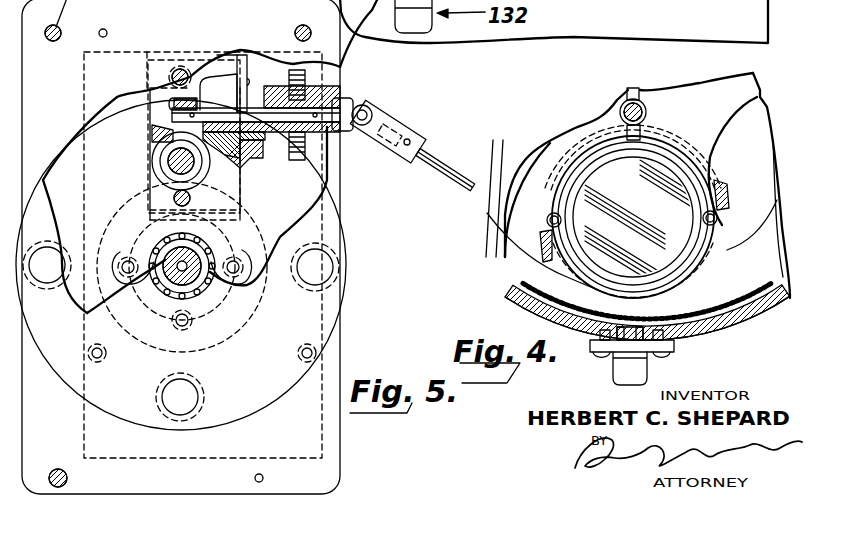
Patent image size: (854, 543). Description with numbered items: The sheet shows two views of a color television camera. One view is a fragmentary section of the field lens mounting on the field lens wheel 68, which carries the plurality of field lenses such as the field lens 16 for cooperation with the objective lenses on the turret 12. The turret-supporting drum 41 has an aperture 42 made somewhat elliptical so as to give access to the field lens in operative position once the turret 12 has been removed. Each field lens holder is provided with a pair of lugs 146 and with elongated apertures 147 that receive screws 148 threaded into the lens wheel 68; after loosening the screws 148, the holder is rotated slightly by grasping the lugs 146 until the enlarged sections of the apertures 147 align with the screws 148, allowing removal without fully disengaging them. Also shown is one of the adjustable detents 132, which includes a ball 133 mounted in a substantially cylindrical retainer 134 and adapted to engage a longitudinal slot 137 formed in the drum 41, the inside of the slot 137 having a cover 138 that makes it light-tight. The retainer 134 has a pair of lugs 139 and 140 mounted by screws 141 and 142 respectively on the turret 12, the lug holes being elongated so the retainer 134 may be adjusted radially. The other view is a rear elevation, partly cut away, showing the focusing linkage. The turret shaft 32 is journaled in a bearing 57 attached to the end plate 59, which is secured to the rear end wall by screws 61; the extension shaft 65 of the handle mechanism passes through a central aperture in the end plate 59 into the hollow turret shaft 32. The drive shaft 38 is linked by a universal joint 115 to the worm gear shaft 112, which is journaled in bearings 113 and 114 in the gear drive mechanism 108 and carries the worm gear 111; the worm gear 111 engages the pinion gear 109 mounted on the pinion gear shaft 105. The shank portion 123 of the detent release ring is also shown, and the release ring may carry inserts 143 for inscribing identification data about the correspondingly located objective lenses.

In FIG. 4, the turret 12 is at (780, 310).
In FIG. 4, the field lens 16 is at (683, 234).
In FIG. 5, the turret shaft 32 is at (187, 264).
In FIG. 5, the drive shaft 38 is at (437, 157).
In FIG. 4, the turret-supporting drum 41 is at (761, 295).
In FIG. 4, the aperture 42 is at (552, 220).
In FIG. 5, the bearing 57 is at (167, 247).
In FIG. 5, the end plate 59 is at (341, 350).
In FIG. 5, the screws 61 is at (58, 470).
In FIG. 5, the extension shaft 65 is at (180, 270).
In FIG. 4, the field lens wheel 68 is at (757, 88).
In FIG. 5, the pinion gear shaft 105 is at (180, 161).
In FIG. 5, the gear drive mechanism 108 is at (147, 64).
In FIG. 5, the pinion gear 109 is at (157, 173).
In FIG. 5, the worm gear 111 is at (173, 130).
In FIG. 5, the worm gear shaft 112 is at (266, 155).
In FIG. 5, the bearing 113 is at (193, 113).
In FIG. 5, the bearing 114 is at (310, 93).
In FIG. 5, the universal joint 115 is at (363, 101).
In FIG. 5, the shank portion 123 is at (167, 273).
In FIG. 4, the adjustable detent 132 is at (655, 367).
In FIG. 4, the ball 133 is at (613, 322).
In FIG. 4, the retainer 134 is at (617, 363).
In FIG. 4, the longitudinal slot 137 is at (675, 303).
In FIG. 4, the cover 138 is at (618, 320).
In FIG. 4, the lug 139 is at (593, 337).
In FIG. 4, the lug 140 is at (730, 339).
In FIG. 4, the screw 141 is at (593, 363).
In FIG. 4, the screw 142 is at (678, 352).
In FIG. 5, the inserts 143 is at (45, 284).
In FIG. 4, the lugs 146 is at (533, 235).
In FIG. 4, the elongated apertures 147 is at (573, 257).
In FIG. 4, the screws 148 is at (550, 177).